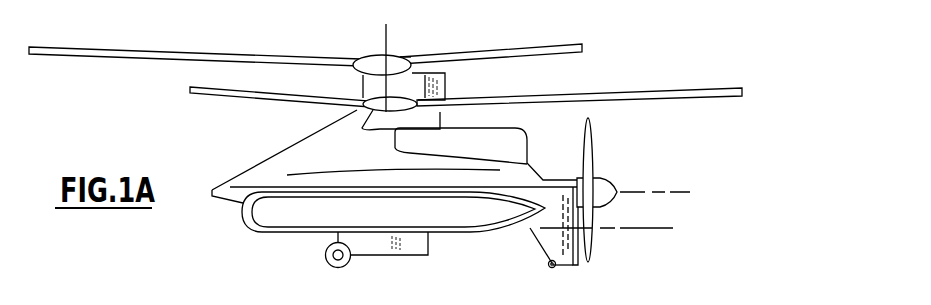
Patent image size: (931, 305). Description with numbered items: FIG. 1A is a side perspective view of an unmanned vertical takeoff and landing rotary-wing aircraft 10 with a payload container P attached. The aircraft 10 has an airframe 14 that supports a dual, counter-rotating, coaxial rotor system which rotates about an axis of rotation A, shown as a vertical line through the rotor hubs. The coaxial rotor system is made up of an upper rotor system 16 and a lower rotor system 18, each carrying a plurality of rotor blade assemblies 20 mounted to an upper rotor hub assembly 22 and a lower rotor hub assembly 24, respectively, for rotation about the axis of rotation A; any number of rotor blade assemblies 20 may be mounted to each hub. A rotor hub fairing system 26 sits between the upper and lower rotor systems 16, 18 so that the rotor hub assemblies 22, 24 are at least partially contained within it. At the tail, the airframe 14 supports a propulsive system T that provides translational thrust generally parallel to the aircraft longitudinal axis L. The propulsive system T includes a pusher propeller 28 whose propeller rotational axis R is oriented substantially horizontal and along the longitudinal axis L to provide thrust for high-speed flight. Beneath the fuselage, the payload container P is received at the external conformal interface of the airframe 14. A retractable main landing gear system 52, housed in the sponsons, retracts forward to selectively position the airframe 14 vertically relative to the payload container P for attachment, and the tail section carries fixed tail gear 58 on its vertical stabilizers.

The rotary-wing aircraft 10 is at (757, 110).
The airframe 14 is at (487, 150).
The upper rotor system 16 is at (412, 60).
The lower rotor system 18 is at (363, 97).
The rotor blade assemblies 20 is at (250, 56).
The upper rotor hub assembly 22 is at (374, 55).
The lower rotor hub assembly 24 is at (357, 112).
The rotor hub fairing system 26 is at (478, 84).
The pusher propeller 28 is at (593, 143).
The retractable main landing gear system 52 is at (342, 267).
The fixed tail gear 58 is at (556, 268).
The axis of rotation A is at (386, 40).
The propulsive system T is at (608, 173).
The propeller rotational axis R is at (660, 190).
The aircraft longitudinal axis L is at (628, 230).
The payload container P is at (407, 243).